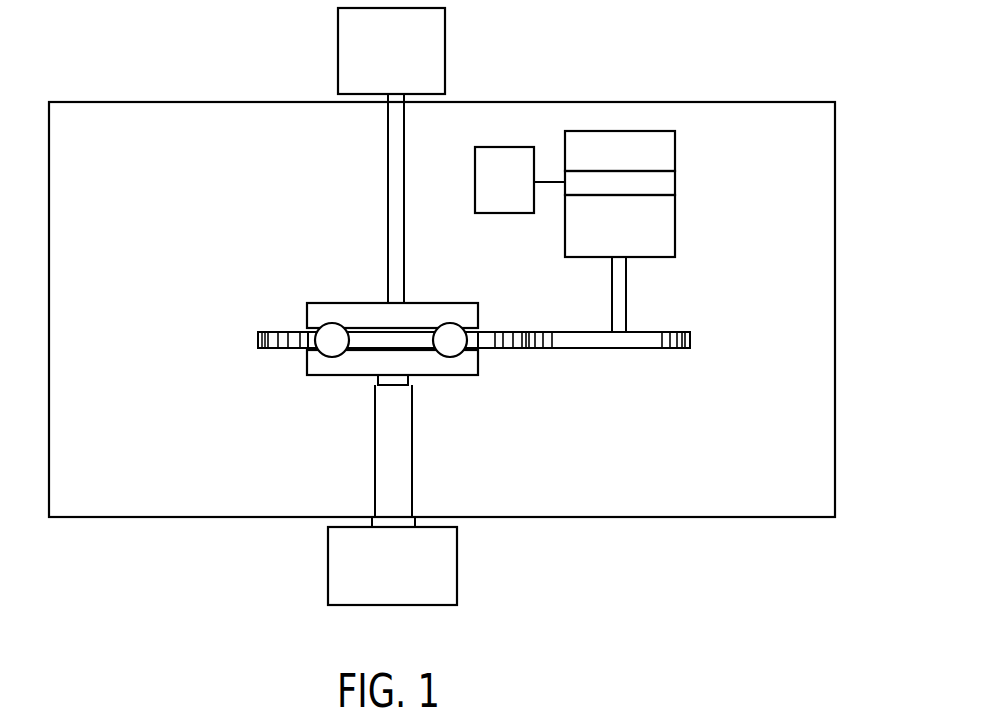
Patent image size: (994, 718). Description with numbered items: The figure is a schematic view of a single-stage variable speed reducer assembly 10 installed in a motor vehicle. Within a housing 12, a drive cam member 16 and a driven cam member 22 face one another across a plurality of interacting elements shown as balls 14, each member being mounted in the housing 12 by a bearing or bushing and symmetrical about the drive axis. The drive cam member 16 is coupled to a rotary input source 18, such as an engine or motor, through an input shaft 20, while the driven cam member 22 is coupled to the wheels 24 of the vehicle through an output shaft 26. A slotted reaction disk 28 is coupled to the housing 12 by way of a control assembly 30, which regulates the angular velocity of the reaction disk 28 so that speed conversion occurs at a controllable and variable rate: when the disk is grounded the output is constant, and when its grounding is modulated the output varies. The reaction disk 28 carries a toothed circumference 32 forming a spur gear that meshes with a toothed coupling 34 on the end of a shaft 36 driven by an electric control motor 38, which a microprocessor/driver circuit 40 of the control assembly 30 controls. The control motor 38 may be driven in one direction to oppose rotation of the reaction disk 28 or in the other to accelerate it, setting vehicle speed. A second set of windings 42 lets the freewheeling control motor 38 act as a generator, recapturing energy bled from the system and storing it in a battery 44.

The variable speed reducer assembly 10 is at (562, 56).
The housing 12 is at (835, 173).
The balls 14 is at (322, 350).
The drive cam member 16 is at (368, 303).
The rotary input source 18 is at (378, 66).
The input shaft 20 is at (388, 165).
The driven cam member 22 is at (427, 376).
The wheels 24 is at (392, 566).
The output shaft 26 is at (375, 430).
The slotted reaction disk 28 is at (268, 332).
The control assembly 30 is at (731, 163).
The toothed circumference 32 is at (267, 348).
The toothed coupling 34 is at (688, 332).
The shaft 36 is at (612, 283).
The electric control motor 38 is at (601, 231).
The microprocessor/driver circuit 40 is at (601, 163).
The second set of windings 42 is at (668, 184).
The battery 44 is at (488, 194).